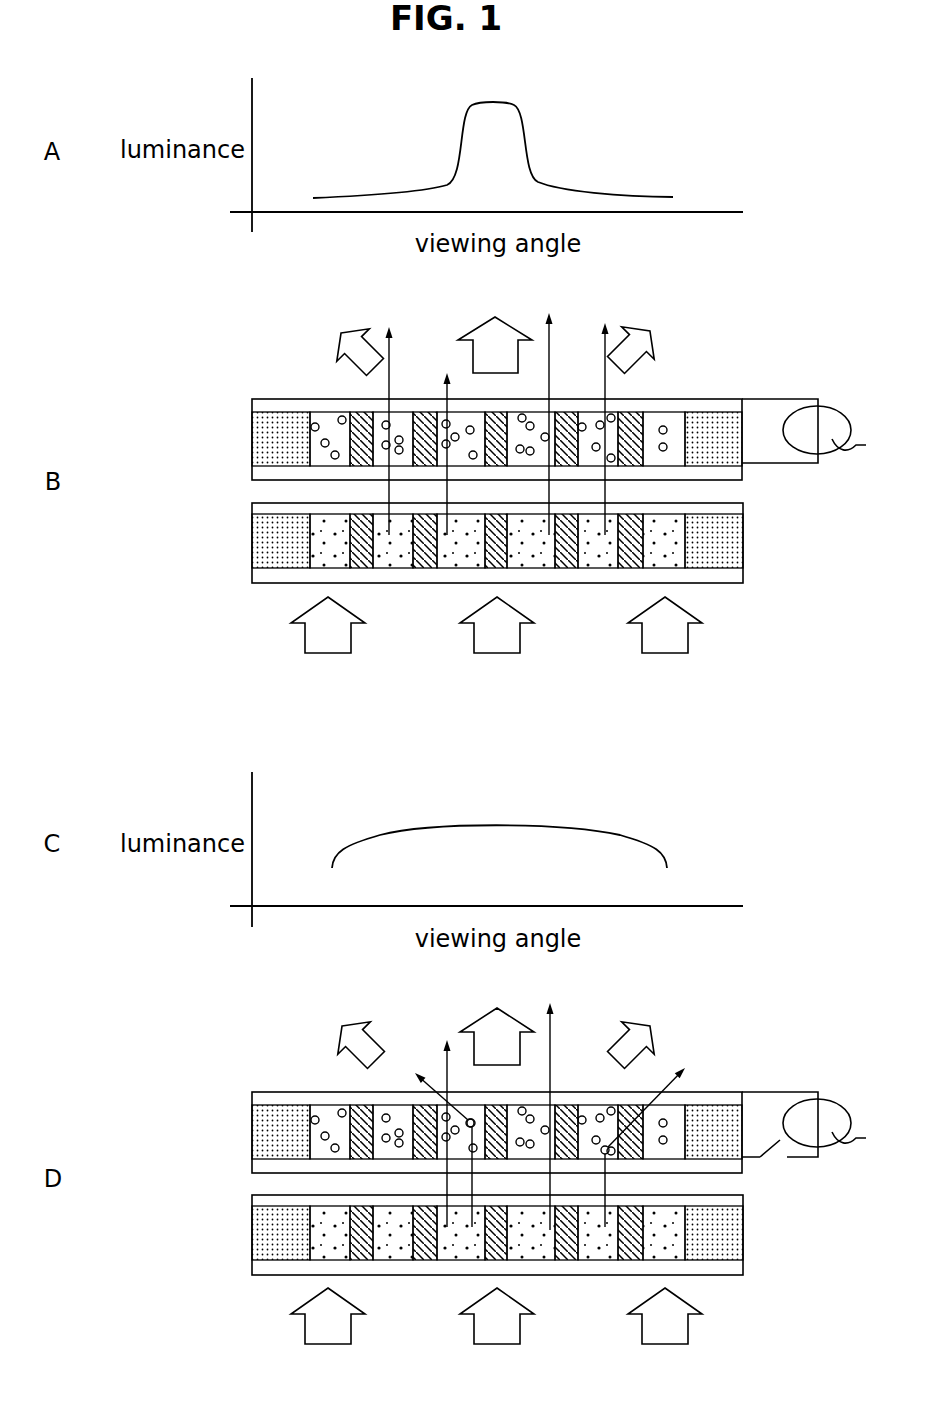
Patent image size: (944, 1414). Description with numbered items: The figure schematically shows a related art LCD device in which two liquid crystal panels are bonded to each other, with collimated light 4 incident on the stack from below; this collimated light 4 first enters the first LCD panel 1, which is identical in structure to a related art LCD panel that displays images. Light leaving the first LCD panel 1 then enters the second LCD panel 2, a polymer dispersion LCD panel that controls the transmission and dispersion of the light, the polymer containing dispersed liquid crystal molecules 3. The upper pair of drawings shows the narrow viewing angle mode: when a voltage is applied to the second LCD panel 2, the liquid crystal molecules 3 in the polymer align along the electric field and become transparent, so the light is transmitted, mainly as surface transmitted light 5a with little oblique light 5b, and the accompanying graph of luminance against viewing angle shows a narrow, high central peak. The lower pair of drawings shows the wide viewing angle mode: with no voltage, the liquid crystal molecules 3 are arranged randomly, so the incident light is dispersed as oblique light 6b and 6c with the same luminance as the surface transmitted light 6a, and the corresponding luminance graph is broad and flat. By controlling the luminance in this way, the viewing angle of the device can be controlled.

The first LCD panel 1 is at (746, 600).
The second LCD panel 2 is at (746, 374).
The spacer particles 3 is at (315, 423).
The incident light 4 is at (496, 988).
The light emitted in normal direction 5a is at (495, 332).
The light emitted in oblique direction 5b is at (495, 348).
The surface transmitted light 6a is at (497, 1019).
The dispersed light 6b is at (643, 1040).
The dispersed light 6c is at (349, 1040).